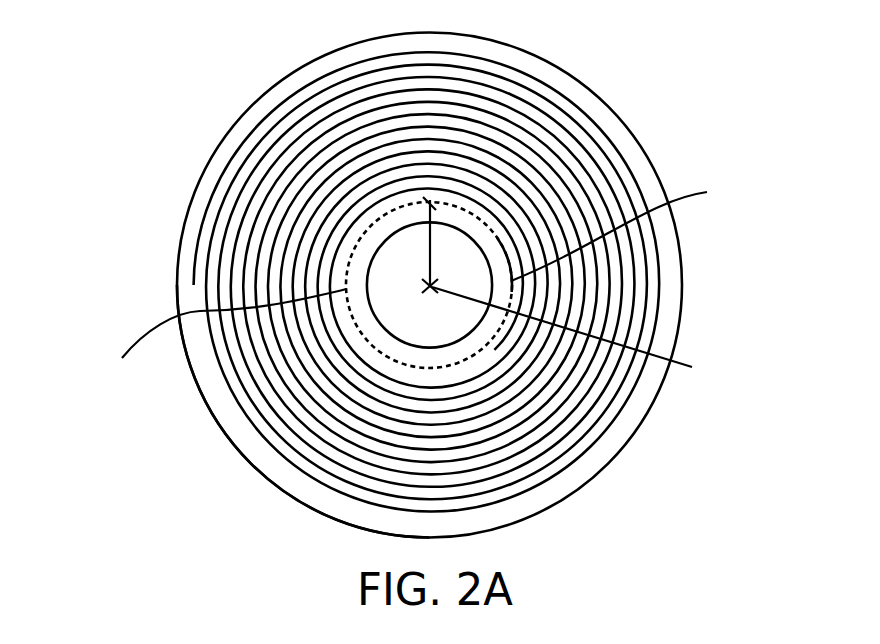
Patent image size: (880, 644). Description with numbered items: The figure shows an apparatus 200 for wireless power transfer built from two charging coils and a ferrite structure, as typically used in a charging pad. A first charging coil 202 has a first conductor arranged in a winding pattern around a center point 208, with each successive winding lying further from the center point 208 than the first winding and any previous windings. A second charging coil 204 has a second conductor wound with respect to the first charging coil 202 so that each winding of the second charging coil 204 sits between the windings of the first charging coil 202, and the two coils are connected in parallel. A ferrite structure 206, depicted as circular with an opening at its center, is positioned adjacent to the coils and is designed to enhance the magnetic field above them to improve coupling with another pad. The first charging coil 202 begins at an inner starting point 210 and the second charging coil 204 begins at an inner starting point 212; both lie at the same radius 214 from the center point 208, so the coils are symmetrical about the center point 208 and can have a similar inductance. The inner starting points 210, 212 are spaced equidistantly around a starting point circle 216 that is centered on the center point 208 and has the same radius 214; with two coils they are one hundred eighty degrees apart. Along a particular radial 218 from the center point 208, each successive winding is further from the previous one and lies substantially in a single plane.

The apparatus 200 is at (140, 49).
The first charging coil 202 is at (195, 284).
The second charging coil 204 is at (662, 284).
The ferrite structure 206 is at (221, 432).
The center point 208 is at (436, 292).
The inner starting point of the first charging coil 210 is at (225, 336).
The inner starting point of the second charging coil 212 is at (632, 231).
The radius 214 is at (448, 241).
The starting point circle 216 is at (398, 208).
The radial 218 is at (677, 370).